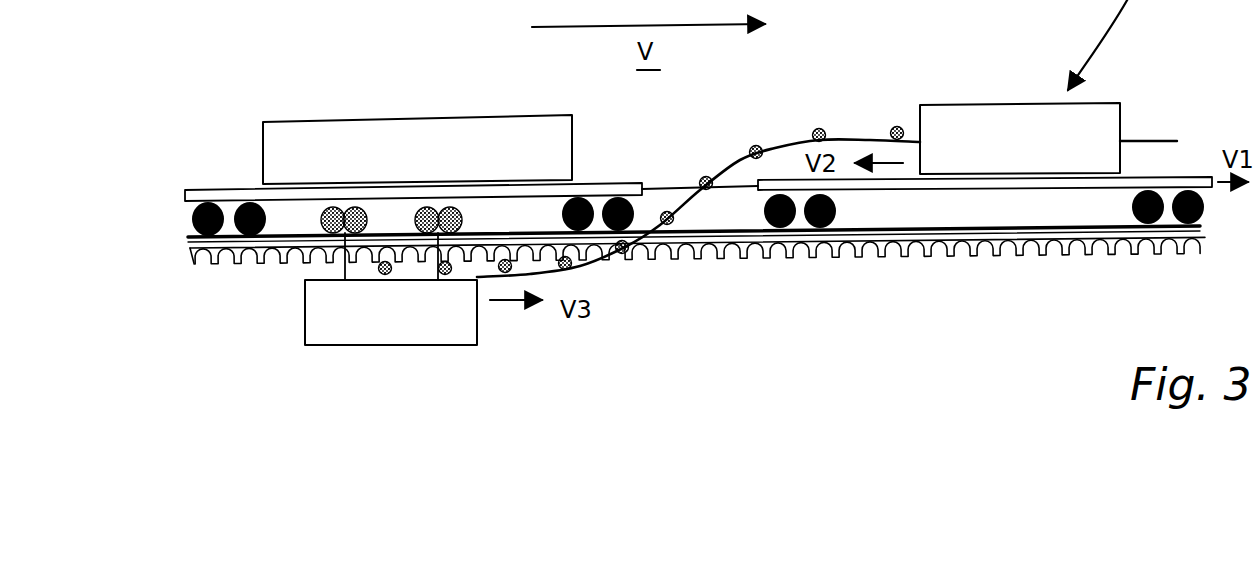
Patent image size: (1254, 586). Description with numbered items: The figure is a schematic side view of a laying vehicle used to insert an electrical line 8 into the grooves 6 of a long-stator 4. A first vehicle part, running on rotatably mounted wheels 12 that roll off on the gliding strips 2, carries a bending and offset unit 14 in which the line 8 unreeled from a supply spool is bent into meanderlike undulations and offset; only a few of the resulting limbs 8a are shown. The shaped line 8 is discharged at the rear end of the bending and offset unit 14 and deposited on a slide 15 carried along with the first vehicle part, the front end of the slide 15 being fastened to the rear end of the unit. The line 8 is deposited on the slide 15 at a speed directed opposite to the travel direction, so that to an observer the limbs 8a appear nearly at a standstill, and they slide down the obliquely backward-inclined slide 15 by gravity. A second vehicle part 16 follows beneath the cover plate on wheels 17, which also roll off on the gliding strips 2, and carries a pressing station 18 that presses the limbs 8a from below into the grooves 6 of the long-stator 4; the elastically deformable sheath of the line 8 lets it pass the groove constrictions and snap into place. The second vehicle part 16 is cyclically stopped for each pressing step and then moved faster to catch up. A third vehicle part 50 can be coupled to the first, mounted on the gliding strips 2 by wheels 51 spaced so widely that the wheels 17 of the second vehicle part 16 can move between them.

The gliding strips 2 is at (873, 214).
The long-stator 4 is at (697, 243).
The grooves 6 is at (982, 251).
The line 8 is at (1132, 140).
The limbs 8a is at (754, 146).
The wheels 12 is at (784, 228).
The bending and offset unit 14 is at (1005, 112).
The slide 15 is at (850, 140).
The second vehicle part 16 is at (294, 304).
The wheels 17 is at (333, 207).
The pressing station 18 is at (432, 332).
The third vehicle part 50 is at (296, 113).
The wheels 51 is at (191, 218).